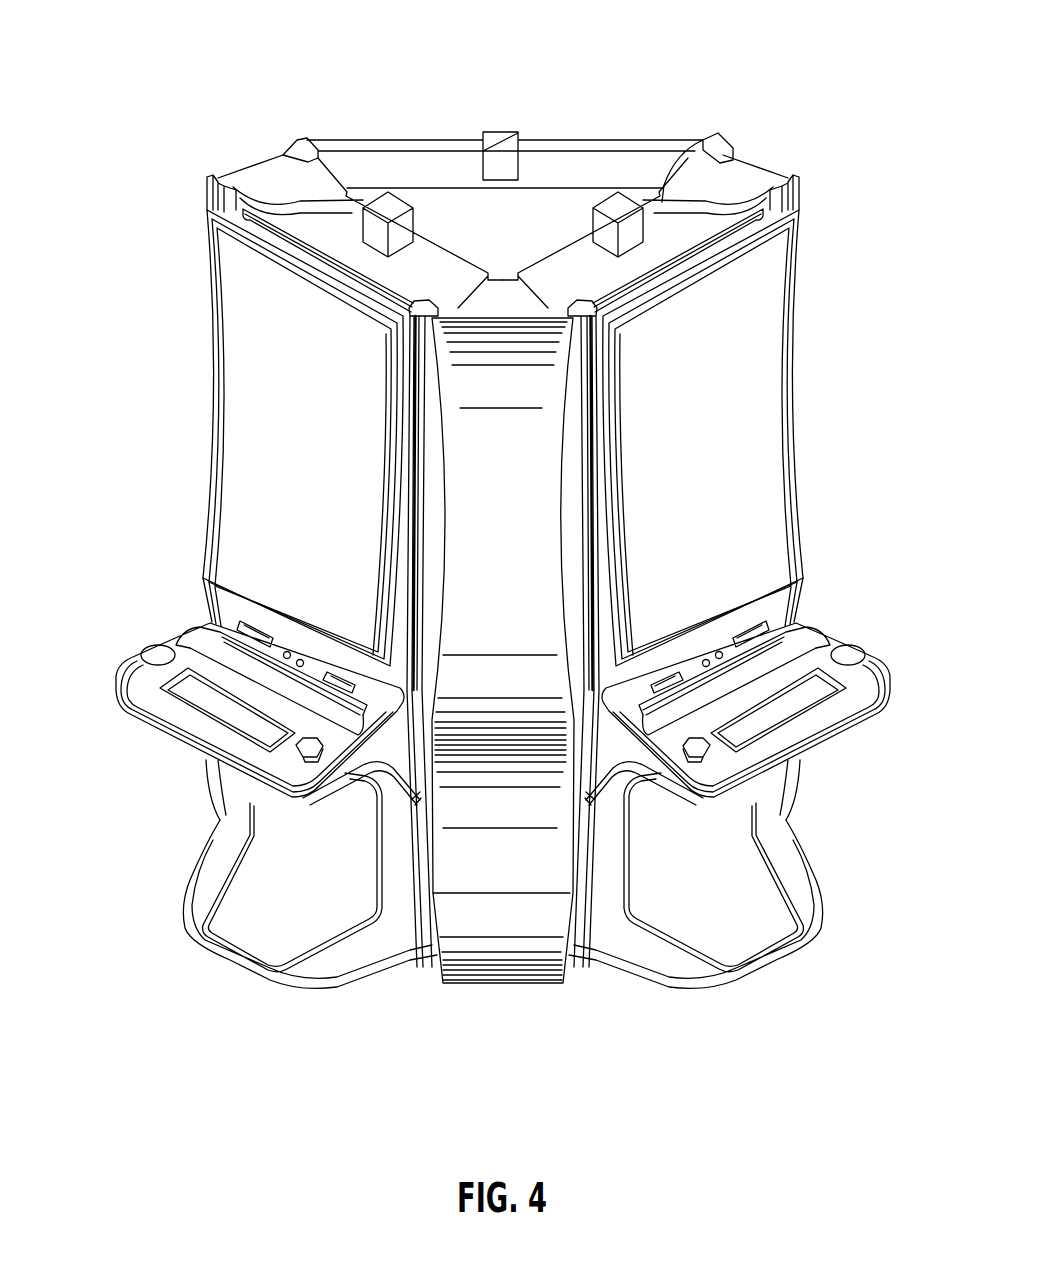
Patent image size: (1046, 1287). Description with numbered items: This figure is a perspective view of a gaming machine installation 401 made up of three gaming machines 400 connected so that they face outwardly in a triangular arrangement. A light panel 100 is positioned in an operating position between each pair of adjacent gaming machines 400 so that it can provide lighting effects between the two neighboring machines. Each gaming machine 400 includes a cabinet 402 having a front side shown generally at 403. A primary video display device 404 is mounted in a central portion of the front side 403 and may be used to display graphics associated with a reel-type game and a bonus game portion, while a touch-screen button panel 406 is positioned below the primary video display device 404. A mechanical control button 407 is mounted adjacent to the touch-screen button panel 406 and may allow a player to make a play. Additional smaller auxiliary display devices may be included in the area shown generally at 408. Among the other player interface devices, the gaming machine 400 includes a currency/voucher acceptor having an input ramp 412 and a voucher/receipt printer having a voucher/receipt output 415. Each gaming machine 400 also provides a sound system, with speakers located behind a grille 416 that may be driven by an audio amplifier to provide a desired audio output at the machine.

The gaming machine installation 401 is at (206, 53).
The light panel 100 is at (248, 156).
The gaming machine 400 is at (566, 130).
The front side 403 is at (248, 390).
The primary video display device 404 is at (243, 478).
The area for auxiliary display devices 408 is at (145, 688).
The voucher/receipt output 415 is at (232, 667).
The grille 416 is at (213, 599).
The input ramp 412 is at (335, 688).
The touch-screen button panel 406 is at (265, 722).
The mechanical control button 407 is at (297, 750).
The cabinet 402 is at (263, 866).